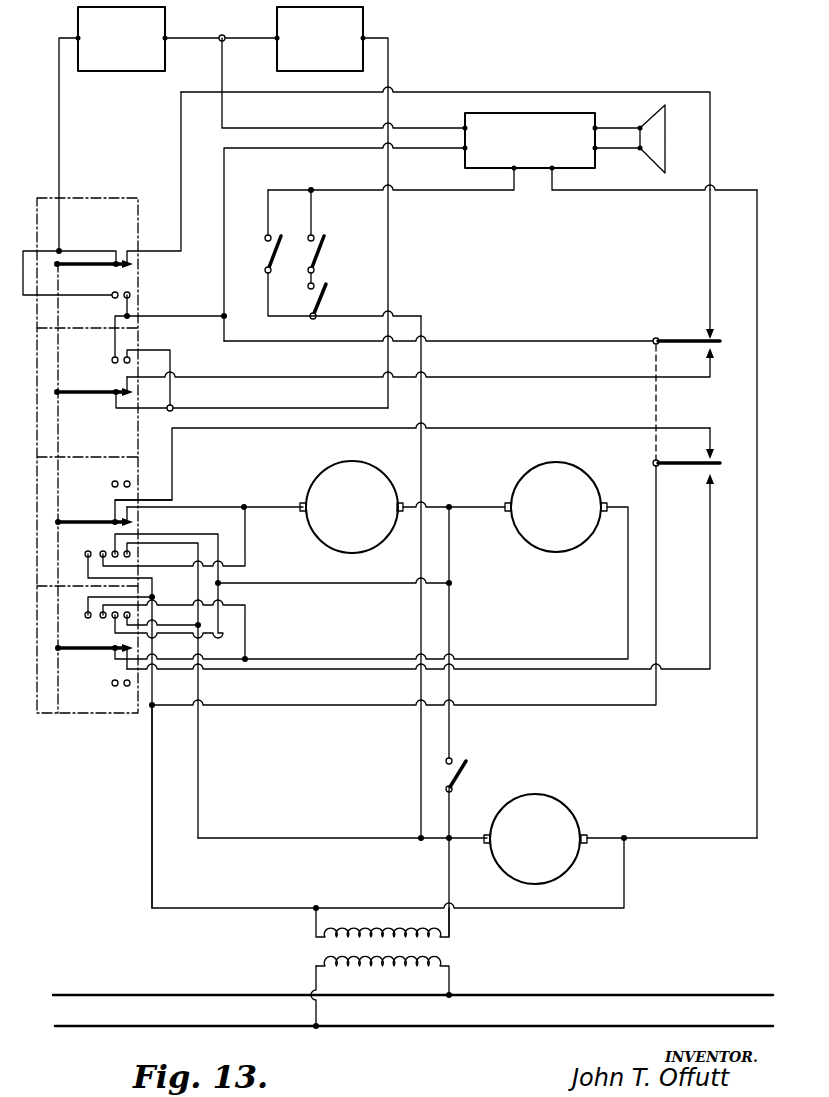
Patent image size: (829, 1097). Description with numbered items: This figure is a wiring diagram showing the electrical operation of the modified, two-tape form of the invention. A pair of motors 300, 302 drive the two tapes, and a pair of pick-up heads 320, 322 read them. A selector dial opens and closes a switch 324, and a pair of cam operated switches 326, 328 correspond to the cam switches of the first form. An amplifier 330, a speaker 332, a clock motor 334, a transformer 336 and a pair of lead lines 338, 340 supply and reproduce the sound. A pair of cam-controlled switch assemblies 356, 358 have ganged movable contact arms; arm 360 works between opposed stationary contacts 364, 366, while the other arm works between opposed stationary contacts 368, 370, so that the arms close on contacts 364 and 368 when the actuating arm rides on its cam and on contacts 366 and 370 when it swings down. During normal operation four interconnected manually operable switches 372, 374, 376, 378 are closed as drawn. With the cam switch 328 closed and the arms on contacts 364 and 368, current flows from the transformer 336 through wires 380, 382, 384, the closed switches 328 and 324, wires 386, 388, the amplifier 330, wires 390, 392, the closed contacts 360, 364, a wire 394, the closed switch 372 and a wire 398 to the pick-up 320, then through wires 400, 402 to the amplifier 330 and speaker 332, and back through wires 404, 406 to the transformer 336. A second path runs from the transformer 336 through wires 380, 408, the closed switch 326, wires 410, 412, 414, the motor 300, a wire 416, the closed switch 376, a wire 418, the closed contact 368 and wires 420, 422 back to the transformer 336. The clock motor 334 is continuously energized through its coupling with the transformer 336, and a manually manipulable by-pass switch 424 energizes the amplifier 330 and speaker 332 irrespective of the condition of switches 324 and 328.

The motor 300 is at (312, 484).
The motor 302 is at (522, 478).
The pick-up head 320 is at (124, 72).
The pick-up head 322 is at (367, 23).
The switch 324 is at (320, 255).
The cam operated switch 326 is at (468, 773).
The cam operated switch 328 is at (323, 302).
The amplifier 330 is at (535, 120).
The speaker 332 is at (667, 135).
The clock motor 334 is at (558, 819).
The transformer 336 is at (404, 967).
The lead line 338 is at (561, 993).
The lead line 340 is at (530, 1028).
The switch assembly 356 is at (649, 391).
The switch assembly 358 is at (631, 454).
The movable contact arm 360 is at (680, 338).
The stationary contact 364 is at (715, 331).
The stationary contact 366 is at (714, 358).
The stationary contact 368 is at (715, 456).
The stationary contact 370 is at (714, 479).
The manually operable switch 372 is at (78, 266).
The manually operable switch 374 is at (86, 396).
The manually operable switch 376 is at (75, 525).
The manually operable switch 378 is at (80, 652).
The wire 380 is at (449, 879).
The wire 382 is at (437, 840).
The wire 384 is at (420, 794).
The wire 386 is at (313, 214).
The wire 388 is at (440, 193).
The wire 390 is at (233, 184).
The wire 392 is at (478, 344).
The wire 394 is at (452, 92).
The wire 398 is at (61, 165).
The wire 400 is at (205, 37).
The wire 402 is at (268, 121).
The wire 404 is at (758, 580).
The wire 406 is at (628, 890).
The wire 408 is at (451, 823).
The wire 410 is at (452, 627).
The wire 412 is at (452, 561).
The wire 414 is at (437, 506).
The wire 416 is at (195, 506).
The wire 418 is at (497, 428).
The wire 420 is at (658, 698).
The wire 422 is at (183, 909).
The by-pass switch 424 is at (275, 262).